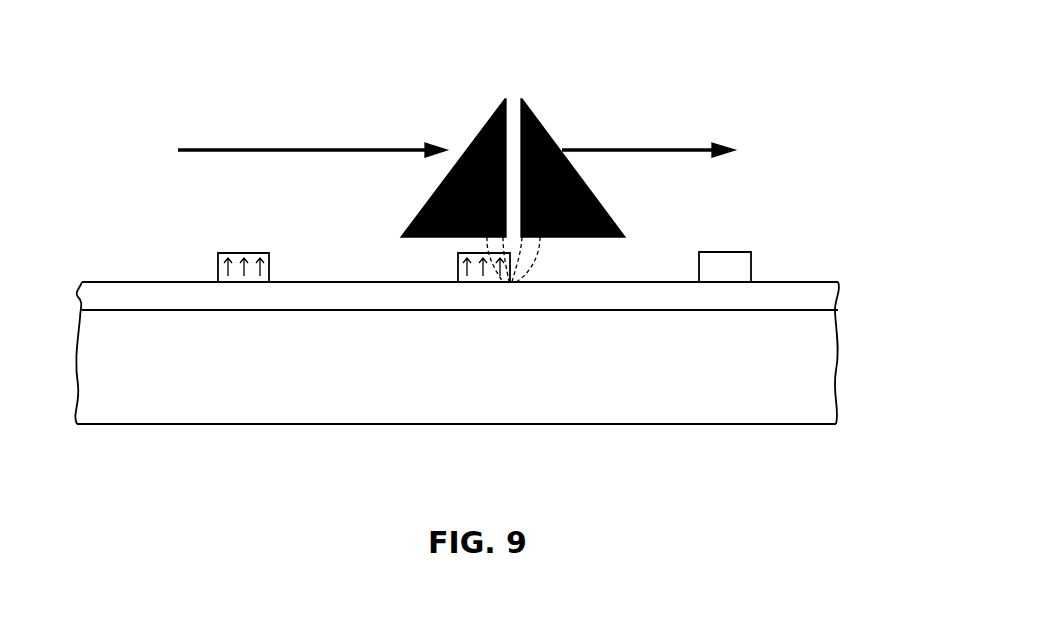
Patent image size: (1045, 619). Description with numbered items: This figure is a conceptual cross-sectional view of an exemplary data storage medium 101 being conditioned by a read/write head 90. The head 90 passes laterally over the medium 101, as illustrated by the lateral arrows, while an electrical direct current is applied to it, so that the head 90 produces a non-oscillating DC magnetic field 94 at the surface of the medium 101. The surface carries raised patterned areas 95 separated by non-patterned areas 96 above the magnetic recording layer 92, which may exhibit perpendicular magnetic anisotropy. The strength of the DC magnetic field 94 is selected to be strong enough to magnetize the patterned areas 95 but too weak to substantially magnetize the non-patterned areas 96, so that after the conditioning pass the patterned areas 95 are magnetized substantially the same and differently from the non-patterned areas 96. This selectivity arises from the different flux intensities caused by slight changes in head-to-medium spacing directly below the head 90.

The read/write head 90 is at (535, 113).
The magnetic recording layer 92 is at (92, 294).
The DC magnetic field 94 is at (547, 247).
The patterned areas 95 is at (458, 266).
The non-patterned areas 96 is at (347, 275).
The data storage medium 101 is at (875, 357).